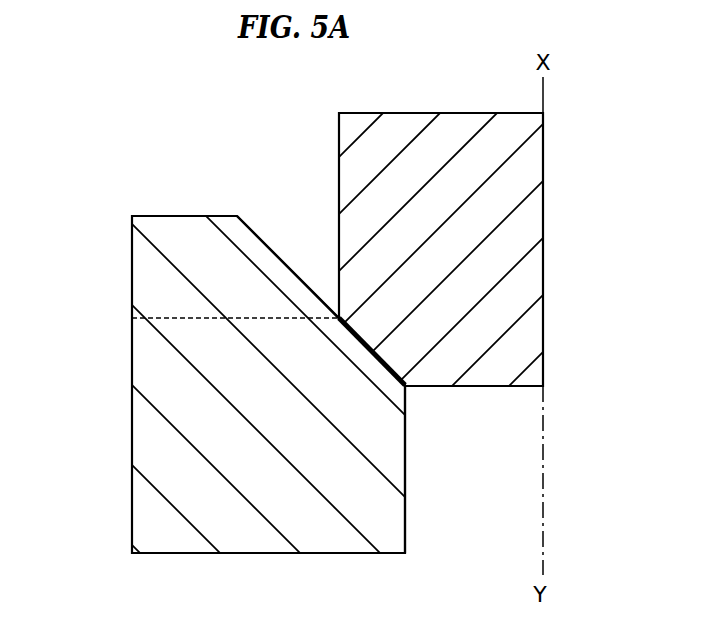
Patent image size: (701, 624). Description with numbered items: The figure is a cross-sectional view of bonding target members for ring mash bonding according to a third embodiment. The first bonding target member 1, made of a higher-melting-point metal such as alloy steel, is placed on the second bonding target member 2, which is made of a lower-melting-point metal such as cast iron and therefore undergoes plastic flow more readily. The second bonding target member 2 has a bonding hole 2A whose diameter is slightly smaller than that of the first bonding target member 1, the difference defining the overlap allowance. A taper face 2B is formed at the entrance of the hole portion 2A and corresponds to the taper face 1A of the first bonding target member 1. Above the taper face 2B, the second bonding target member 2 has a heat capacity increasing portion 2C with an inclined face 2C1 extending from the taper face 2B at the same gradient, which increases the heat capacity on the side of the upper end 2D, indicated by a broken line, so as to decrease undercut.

The first bonding target member 1 is at (572, 228).
The taper face 1A is at (383, 360).
The second bonding target member 2 is at (128, 186).
The bonding hole 2A is at (453, 532).
The taper face 2B is at (364, 347).
The heat capacity increasing portion 2C is at (187, 243).
The inclined face 2C1 is at (273, 250).
The upper end 2D is at (207, 319).